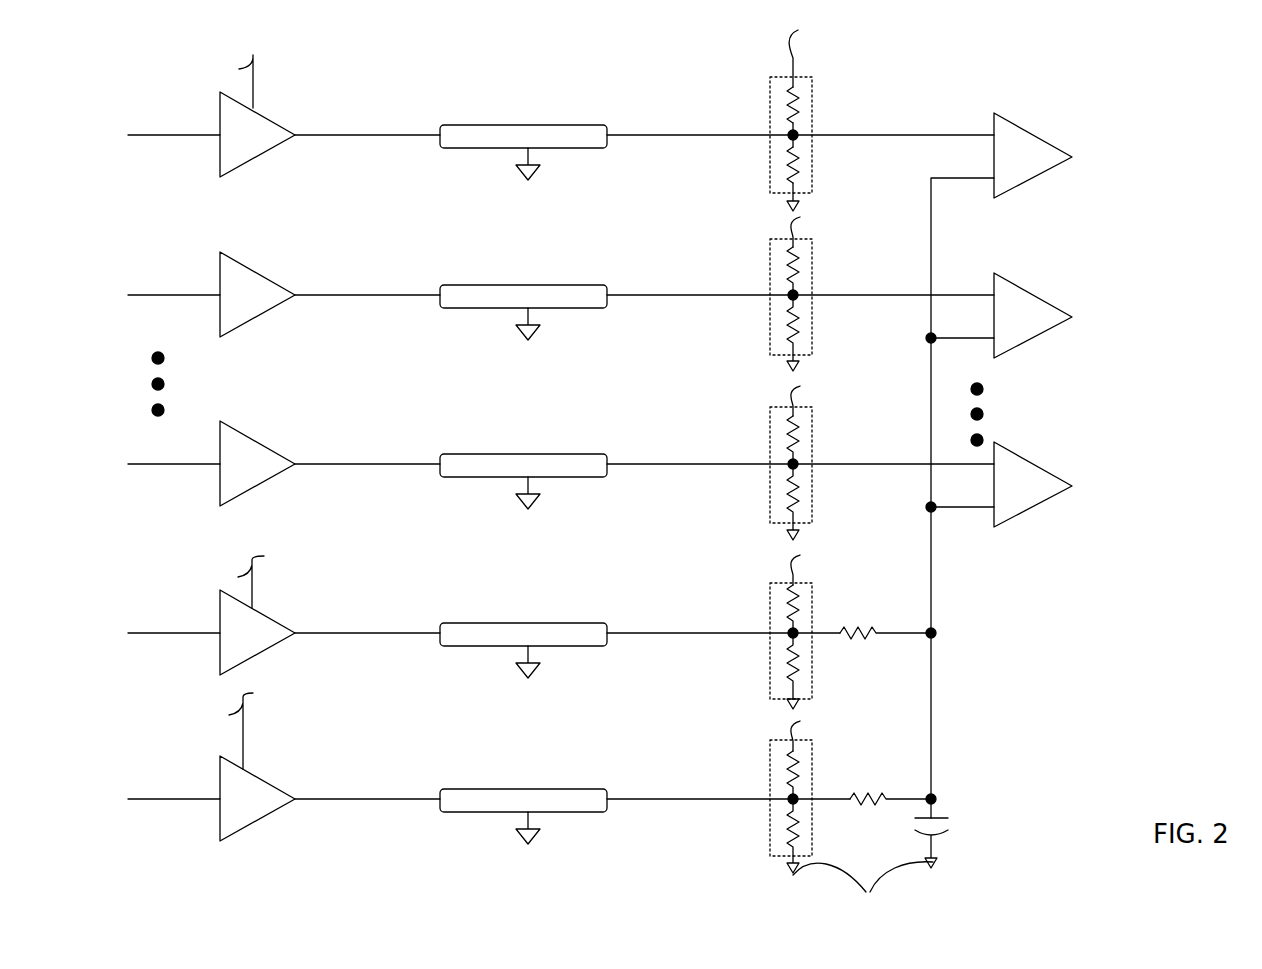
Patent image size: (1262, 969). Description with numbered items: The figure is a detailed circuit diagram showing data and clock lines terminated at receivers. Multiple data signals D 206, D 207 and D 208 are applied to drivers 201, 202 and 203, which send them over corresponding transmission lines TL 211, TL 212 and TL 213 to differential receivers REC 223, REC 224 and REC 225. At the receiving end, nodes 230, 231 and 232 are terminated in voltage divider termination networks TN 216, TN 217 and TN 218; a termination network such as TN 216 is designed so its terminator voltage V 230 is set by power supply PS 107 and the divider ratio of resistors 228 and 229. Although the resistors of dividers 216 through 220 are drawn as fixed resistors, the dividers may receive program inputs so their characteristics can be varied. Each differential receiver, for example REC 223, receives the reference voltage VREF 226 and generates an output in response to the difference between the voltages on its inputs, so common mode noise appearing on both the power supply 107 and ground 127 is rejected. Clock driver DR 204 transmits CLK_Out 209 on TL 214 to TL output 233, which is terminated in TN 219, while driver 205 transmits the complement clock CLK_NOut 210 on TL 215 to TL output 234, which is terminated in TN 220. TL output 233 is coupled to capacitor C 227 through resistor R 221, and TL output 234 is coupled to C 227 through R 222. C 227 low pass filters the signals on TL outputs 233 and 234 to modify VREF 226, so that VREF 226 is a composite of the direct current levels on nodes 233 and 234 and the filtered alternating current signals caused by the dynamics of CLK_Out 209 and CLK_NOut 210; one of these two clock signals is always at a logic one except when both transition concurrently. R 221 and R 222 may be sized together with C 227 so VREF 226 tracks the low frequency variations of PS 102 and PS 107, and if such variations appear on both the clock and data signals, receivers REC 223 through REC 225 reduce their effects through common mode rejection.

The power supply 102 is at (255, 62).
The power supply 107 is at (809, 46).
The ground 127 is at (863, 891).
The driver 201 is at (268, 108).
The driver 202 is at (268, 270).
The driver 203 is at (262, 435).
The clock driver 204 is at (265, 610).
The complement clock driver 205 is at (262, 773).
The data signal 206 is at (163, 103).
The data signal 207 is at (165, 260).
The data signal 208 is at (165, 465).
The CLK_Out clock signal 209 is at (155, 633).
The CLK_NOut complement clock signal 210 is at (155, 800).
The transmission line 211 is at (470, 125).
The transmission line 212 is at (470, 285).
The transmission line 213 is at (490, 454).
The transmission line 214 is at (487, 623).
The transmission line 215 is at (505, 789).
The termination network 216 is at (785, 131).
The termination network 217 is at (770, 270).
The termination network 218 is at (770, 438).
The termination network 219 is at (812, 612).
The termination network 220 is at (768, 768).
The resistor 221 is at (868, 645).
The resistor 222 is at (875, 792).
The differential receiver 223 is at (1015, 118).
The differential receiver 224 is at (1025, 282).
The differential receiver 225 is at (1030, 460).
The reference voltage VREF 226 is at (933, 600).
The capacitor 227 is at (942, 820).
The resistor 228 is at (802, 102).
The resistor 229 is at (778, 160).
The node 230 is at (932, 135).
The node 231 is at (852, 272).
The node 232 is at (855, 440).
The TL output 233 is at (695, 633).
The TL output 234 is at (695, 798).